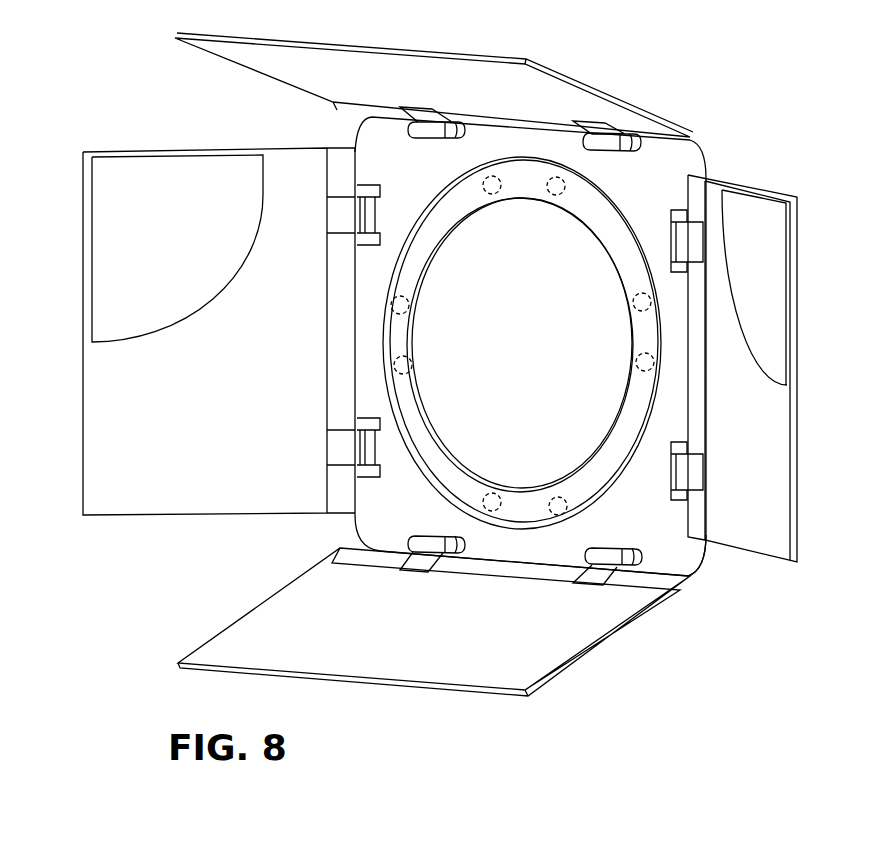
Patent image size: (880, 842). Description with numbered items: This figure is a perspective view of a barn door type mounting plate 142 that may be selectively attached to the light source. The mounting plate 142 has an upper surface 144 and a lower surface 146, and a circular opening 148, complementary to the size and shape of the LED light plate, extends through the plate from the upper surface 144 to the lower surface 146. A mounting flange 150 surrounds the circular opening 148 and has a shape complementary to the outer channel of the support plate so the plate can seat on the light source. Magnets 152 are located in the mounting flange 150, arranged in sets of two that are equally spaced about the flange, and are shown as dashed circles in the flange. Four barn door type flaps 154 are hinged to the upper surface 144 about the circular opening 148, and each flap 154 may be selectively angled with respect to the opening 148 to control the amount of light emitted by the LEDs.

The barn door type mounting plate 142 is at (700, 160).
The upper surface 144 is at (663, 548).
The lower surface 146 is at (705, 558).
The circular opening 148 is at (587, 450).
The mounting flange 150 is at (600, 255).
The magnets 152 is at (552, 193).
The barn door type flaps 154 is at (430, 52).